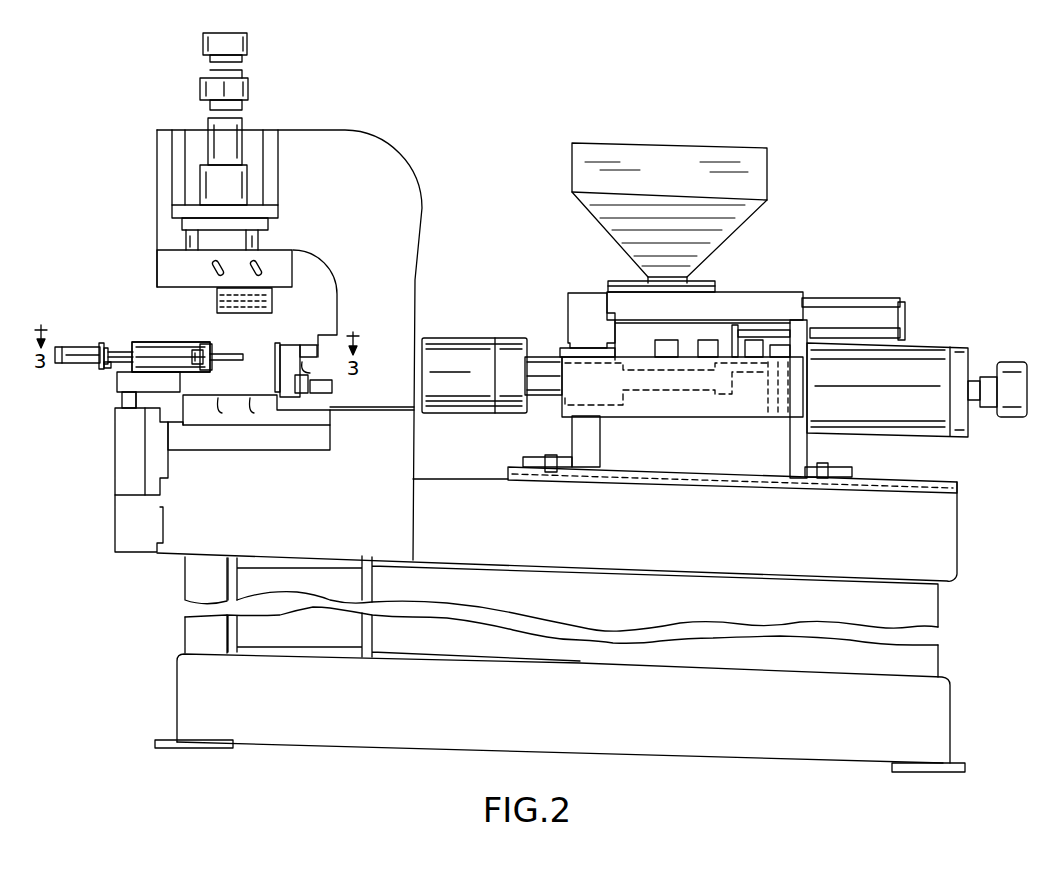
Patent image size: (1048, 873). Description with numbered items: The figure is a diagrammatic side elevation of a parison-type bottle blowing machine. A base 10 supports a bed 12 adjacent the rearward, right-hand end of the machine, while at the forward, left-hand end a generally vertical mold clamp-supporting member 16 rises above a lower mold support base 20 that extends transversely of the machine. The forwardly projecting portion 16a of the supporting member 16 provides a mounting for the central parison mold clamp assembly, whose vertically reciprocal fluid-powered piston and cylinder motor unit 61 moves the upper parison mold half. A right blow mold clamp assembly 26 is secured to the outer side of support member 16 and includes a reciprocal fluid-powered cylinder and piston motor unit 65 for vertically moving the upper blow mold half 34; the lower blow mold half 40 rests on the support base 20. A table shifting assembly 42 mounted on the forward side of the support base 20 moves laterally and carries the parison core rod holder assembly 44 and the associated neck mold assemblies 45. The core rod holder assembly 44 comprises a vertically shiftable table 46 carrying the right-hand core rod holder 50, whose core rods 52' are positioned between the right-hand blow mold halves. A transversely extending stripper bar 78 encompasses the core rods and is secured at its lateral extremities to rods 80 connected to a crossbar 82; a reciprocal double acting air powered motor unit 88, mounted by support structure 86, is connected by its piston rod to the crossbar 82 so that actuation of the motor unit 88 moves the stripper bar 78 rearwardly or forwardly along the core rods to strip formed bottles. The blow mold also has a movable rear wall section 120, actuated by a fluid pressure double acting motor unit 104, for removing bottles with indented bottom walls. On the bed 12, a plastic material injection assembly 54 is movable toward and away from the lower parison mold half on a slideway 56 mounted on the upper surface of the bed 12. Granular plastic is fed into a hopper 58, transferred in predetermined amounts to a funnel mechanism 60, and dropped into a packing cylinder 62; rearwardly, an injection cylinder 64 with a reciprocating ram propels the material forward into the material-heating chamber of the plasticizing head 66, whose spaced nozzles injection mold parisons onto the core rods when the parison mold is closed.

The base 10 is at (195, 686).
The bed 12 is at (942, 482).
The mold clamp-supporting member 16 is at (424, 208).
The forwardly projecting portion 16a is at (165, 162).
The lower mold support base 20 is at (222, 447).
The right blow mold clamp assembly 26 is at (296, 240).
The upper blow mold half 34 is at (274, 304).
The lower blow mold half 40 is at (246, 398).
The table shifting assembly 42 is at (133, 516).
The parison core rod holder assembly 44 is at (134, 341).
The neck mold assembly 45 is at (205, 342).
The vertically shiftable table 46 is at (120, 383).
The core rod holder 50 is at (156, 342).
The core rods 52' is at (244, 339).
The plastic material injection assembly 54 is at (764, 291).
The slideway 56 is at (882, 480).
The hopper 58 is at (722, 236).
The funnel mechanism 60 is at (580, 318).
The piston and cylinder motor unit 61 is at (249, 45).
The packing cylinder 62 is at (640, 409).
The injection cylinder 64 is at (930, 348).
The cylinder and piston motor unit 65 is at (238, 142).
The plasticizing head 66 is at (460, 346).
The stripper bar 78 is at (203, 353).
The rods 80 is at (158, 390).
The crossbar 82 is at (104, 343).
The support structure 86 is at (110, 368).
The motor unit 88 is at (70, 346).
The fluid pressure double acting motor unit 104 is at (333, 393).
The movable rear wall section 120 is at (282, 345).